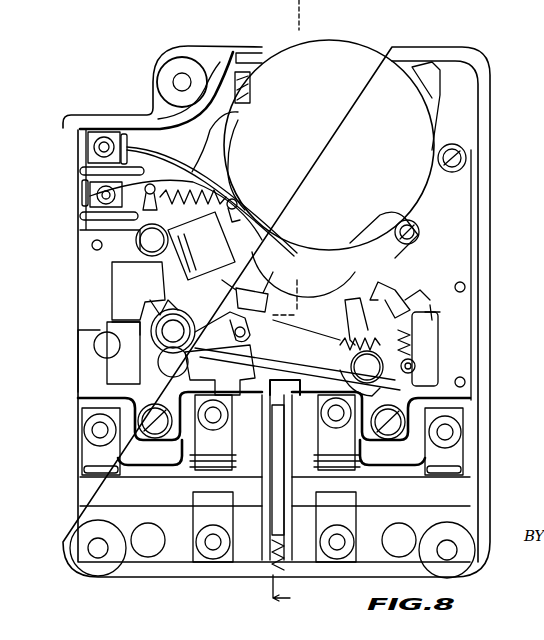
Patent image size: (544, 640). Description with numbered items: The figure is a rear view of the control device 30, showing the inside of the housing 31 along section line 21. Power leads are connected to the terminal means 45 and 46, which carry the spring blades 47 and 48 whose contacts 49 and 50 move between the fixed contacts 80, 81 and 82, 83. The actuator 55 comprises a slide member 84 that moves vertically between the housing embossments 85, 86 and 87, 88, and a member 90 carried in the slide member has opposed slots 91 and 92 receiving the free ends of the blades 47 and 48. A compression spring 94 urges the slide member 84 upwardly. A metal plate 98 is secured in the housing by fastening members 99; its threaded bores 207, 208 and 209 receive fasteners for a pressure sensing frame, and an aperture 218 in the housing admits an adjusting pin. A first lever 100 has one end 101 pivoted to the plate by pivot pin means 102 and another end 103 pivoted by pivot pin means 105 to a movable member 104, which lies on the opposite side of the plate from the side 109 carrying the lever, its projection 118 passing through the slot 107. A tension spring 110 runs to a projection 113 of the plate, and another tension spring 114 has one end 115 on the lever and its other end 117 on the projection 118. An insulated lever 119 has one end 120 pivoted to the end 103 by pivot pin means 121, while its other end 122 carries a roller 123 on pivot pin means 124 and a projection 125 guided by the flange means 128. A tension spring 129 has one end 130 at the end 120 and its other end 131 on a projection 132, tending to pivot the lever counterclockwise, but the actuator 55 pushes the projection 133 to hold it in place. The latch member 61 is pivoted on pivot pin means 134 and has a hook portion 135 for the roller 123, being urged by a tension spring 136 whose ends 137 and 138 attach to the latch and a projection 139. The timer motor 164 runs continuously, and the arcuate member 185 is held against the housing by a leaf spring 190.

The control device 30 is at (111, 41).
The section line 21 is at (305, 304).
The housing 31 is at (490, 90).
The timer motor 164 is at (352, 62).
The leaf spring 190 is at (432, 98).
The fastening members 99 is at (466, 157).
The side of plate 109 is at (462, 186).
The metal plate 98 is at (470, 218).
The threaded bore 208 is at (465, 288).
The arcuate member 185 is at (220, 132).
The threaded bore 207 is at (95, 243).
The end of tension spring 137 is at (157, 166).
The tension spring 136 is at (238, 176).
The end of tension spring 138 is at (226, 196).
The projection 139 is at (232, 216).
The pivot pin means 134 is at (140, 238).
The latch member 61 is at (200, 264).
The projection 113 is at (262, 292).
The tension spring 110 is at (135, 304).
The pivot pin means 124 is at (186, 312).
The roller 123 is at (192, 334).
The hook portion 135 is at (235, 327).
The projection 125 is at (95, 345).
The aperture 218 is at (128, 335).
The end of lever 122 is at (109, 324).
The flange means 128 is at (120, 352).
The end of lever 101 is at (94, 361).
The pivot pin means 102 is at (123, 354).
The first lever 100 is at (164, 372).
The insulated lever 119 is at (200, 378).
The projection 133 is at (297, 355).
The tension spring 114 is at (350, 340).
The end of tension spring 115 is at (303, 283).
The projection 118 is at (361, 310).
The end of tension spring 117 is at (359, 327).
The slot 107 is at (380, 282).
The movable member 104 is at (422, 290).
The projection 132 is at (444, 304).
The end of tension spring 131 is at (438, 320).
The tension spring 129 is at (438, 338).
The pivot pin means 121 is at (365, 366).
The pivot pin means 105 is at (416, 370).
The end of lever 103 is at (450, 370).
The threaded bore 209 is at (466, 381).
The end of tension spring 130 is at (470, 393).
The end of lever 120 is at (373, 388).
The terminal means 45 is at (82, 418).
The terminal means 46 is at (466, 418).
The housing embossment 85 is at (240, 440).
The housing embossment 87 is at (312, 440).
The fixed contact 80 is at (192, 462).
The fixed contact 82 is at (356, 462).
The slot 91 is at (260, 477).
The slot 92 is at (284, 477).
The member 90 is at (280, 472).
The compression spring 94 is at (266, 560).
The spring blade 47 is at (142, 484).
The contact 49 is at (186, 484).
The contact 50 is at (370, 484).
The spring blade 48 is at (408, 484).
The slide member 84 is at (238, 512).
The fixed contact 81 is at (200, 512).
The fixed contact 83 is at (348, 510).
The housing embossment 86 is at (212, 562).
The actuator 55 is at (248, 560).
The housing embossment 88 is at (320, 570).